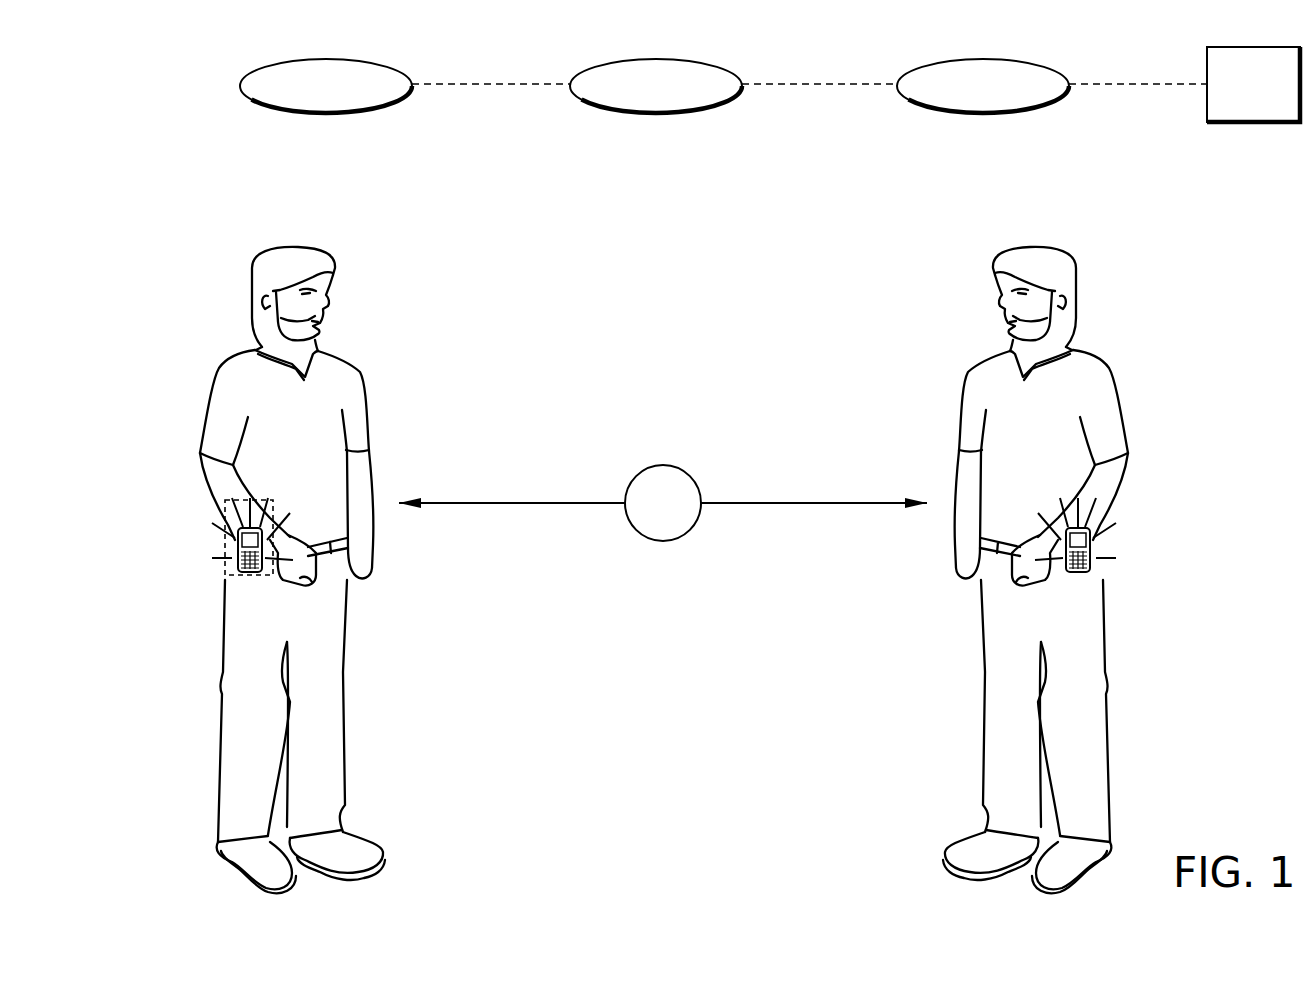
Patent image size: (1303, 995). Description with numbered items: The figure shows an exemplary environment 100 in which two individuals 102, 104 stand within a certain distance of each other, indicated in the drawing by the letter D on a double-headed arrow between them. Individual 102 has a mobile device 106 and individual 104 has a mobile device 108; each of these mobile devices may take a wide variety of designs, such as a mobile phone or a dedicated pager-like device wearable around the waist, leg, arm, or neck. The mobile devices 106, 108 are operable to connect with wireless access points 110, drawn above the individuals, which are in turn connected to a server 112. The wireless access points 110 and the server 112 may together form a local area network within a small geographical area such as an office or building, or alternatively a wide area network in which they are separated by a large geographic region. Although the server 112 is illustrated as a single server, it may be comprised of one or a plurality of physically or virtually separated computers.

The environment 100 is at (180, 150).
The individual 102 is at (300, 232).
The individual 104 is at (1028, 232).
The mobile device 106 is at (216, 575).
The mobile device 108 is at (1112, 575).
The wireless access points 110 is at (323, 57).
The server 112 is at (1253, 84).